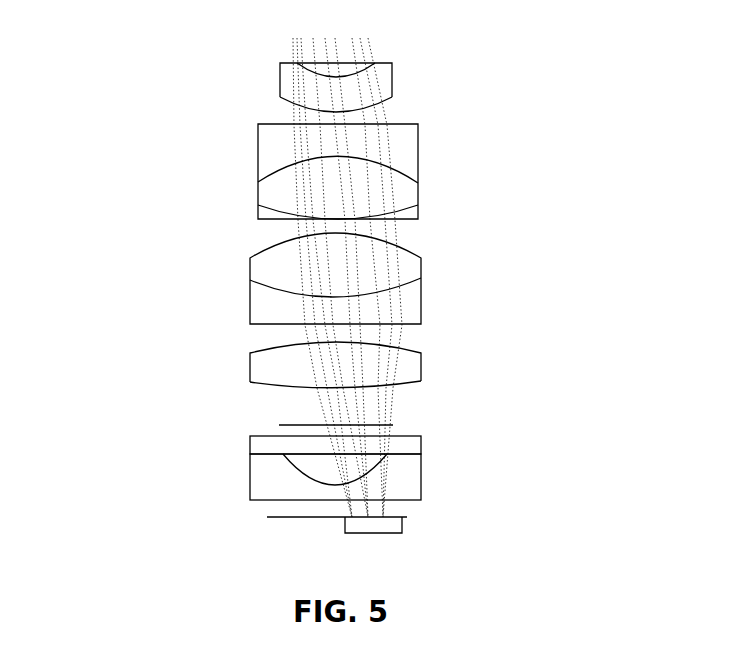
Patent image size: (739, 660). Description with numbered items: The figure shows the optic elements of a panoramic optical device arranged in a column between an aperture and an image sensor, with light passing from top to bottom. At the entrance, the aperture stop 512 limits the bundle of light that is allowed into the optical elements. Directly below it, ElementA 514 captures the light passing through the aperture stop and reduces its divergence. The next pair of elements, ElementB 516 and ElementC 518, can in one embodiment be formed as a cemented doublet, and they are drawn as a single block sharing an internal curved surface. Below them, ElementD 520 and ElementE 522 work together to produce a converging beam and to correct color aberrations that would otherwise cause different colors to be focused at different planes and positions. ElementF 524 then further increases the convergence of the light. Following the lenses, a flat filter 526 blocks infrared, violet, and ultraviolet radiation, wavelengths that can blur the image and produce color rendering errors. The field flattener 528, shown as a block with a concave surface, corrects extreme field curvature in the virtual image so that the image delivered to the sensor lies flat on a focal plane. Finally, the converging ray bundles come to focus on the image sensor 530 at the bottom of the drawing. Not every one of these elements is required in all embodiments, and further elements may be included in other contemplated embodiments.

The aperture stop 512 is at (302, 65).
The ElementA 514 is at (290, 90).
The ElementB 516 is at (272, 152).
The ElementC 518 is at (280, 187).
The ElementD 520 is at (263, 268).
The ElementE 522 is at (263, 312).
The ElementF 524 is at (267, 365).
The flat filter 526 is at (268, 446).
The field flattener 528 is at (270, 490).
The image sensor 530 is at (370, 525).